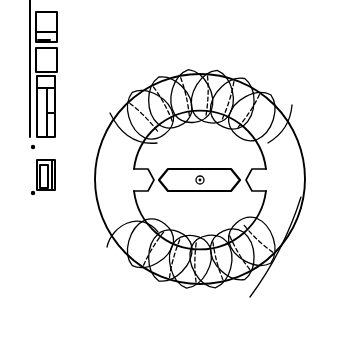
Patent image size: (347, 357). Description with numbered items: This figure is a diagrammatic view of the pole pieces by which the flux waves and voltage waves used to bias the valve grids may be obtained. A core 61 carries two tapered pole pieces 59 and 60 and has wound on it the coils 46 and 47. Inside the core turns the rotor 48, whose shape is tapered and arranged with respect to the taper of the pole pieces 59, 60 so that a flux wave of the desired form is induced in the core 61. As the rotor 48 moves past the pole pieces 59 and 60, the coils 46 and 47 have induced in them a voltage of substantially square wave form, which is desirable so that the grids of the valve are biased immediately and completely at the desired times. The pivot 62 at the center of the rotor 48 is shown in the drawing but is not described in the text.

The coil 46 is at (214, 182).
The coil 47 is at (219, 74).
The rotor 48 is at (271, 261).
The pole piece 59 is at (247, 168).
The pole piece 60 is at (144, 177).
The core 61 is at (294, 204).
The pivot shaft 62 is at (200, 186).